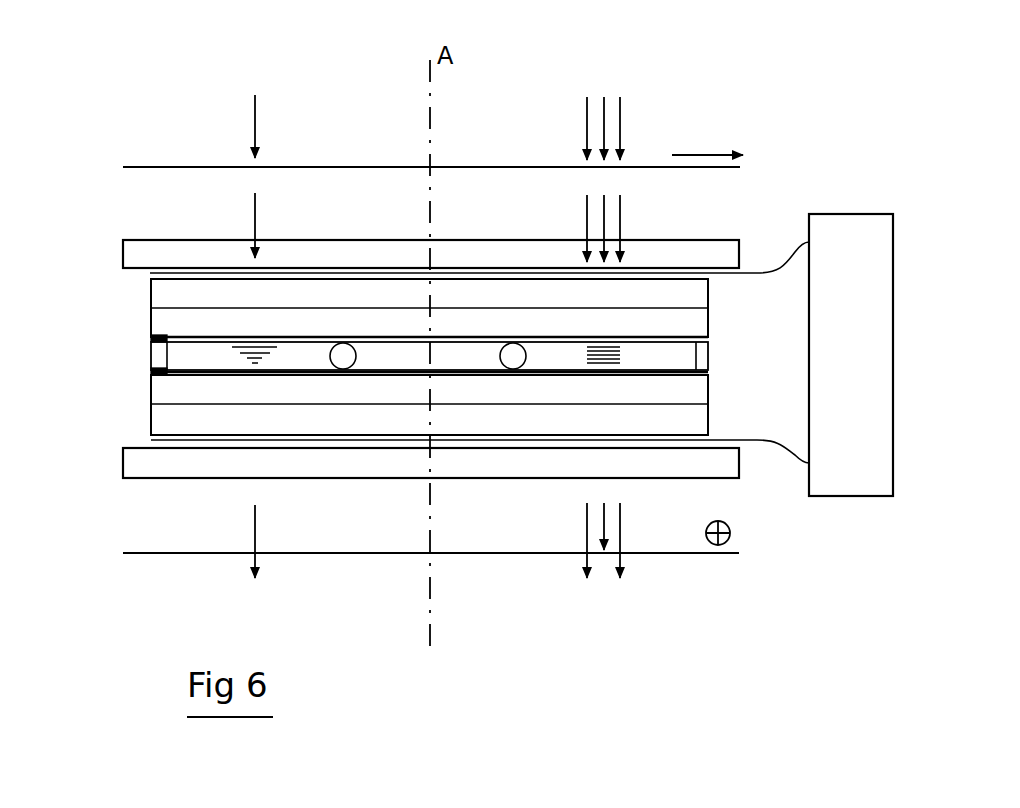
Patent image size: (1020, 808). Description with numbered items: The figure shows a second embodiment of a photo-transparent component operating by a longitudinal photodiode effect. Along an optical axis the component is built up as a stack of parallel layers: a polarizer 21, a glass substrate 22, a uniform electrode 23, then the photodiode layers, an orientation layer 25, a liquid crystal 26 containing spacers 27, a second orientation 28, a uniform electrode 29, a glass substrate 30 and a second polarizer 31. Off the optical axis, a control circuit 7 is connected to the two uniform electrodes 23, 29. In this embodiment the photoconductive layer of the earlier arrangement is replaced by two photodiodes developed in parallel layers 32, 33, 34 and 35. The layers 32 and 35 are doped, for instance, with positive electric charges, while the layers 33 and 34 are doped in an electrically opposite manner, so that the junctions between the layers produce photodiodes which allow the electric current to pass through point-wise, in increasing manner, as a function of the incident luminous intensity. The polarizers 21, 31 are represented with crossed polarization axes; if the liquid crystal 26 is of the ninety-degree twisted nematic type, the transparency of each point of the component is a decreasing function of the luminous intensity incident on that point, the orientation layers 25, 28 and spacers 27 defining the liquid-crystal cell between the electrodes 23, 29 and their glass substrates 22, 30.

The control circuit 7 is at (833, 482).
The polarizer 21 is at (207, 167).
The glass substrate 22 is at (162, 250).
The uniform electrode 23 is at (132, 273).
The orientation layer 25 is at (153, 338).
The liquid crystal 26 is at (183, 355).
The spacers 27 is at (513, 355).
The orientation 28 is at (168, 373).
The uniform electrode 29 is at (152, 442).
The glass substrate 30 is at (140, 468).
The polarizer 31 is at (160, 553).
The parallel layer 32 is at (160, 292).
The parallel layer 33 is at (160, 318).
The parallel layer 34 is at (172, 388).
The parallel layer 35 is at (170, 415).